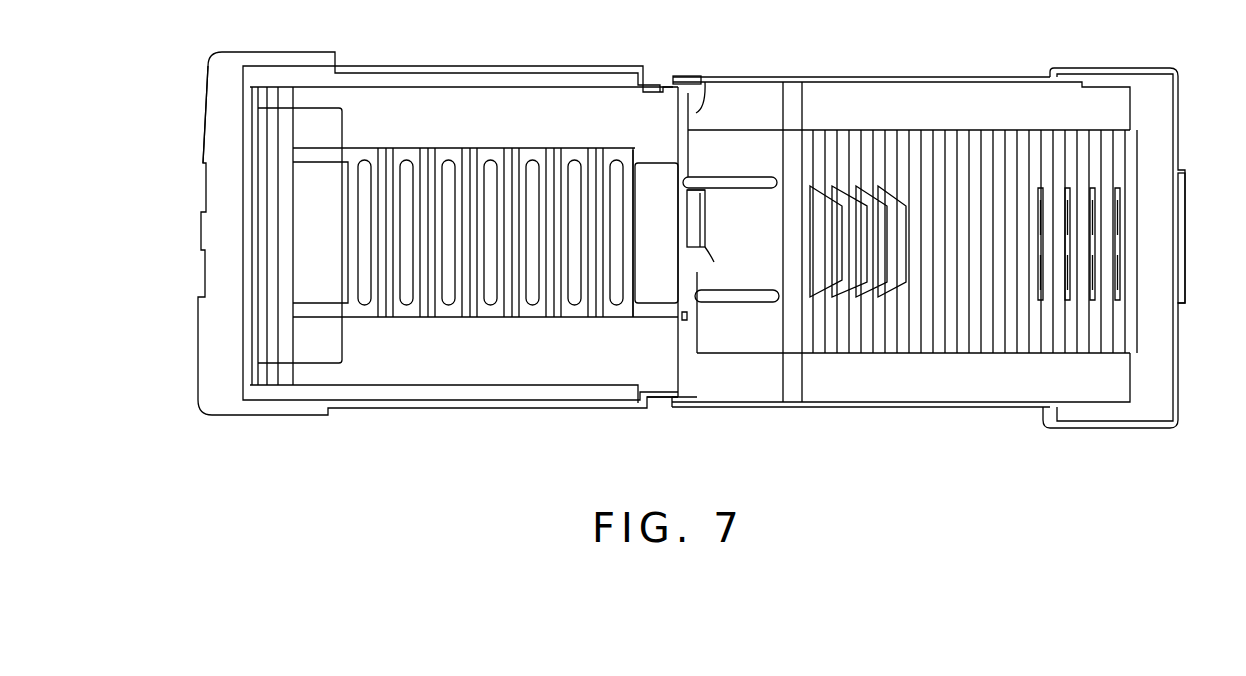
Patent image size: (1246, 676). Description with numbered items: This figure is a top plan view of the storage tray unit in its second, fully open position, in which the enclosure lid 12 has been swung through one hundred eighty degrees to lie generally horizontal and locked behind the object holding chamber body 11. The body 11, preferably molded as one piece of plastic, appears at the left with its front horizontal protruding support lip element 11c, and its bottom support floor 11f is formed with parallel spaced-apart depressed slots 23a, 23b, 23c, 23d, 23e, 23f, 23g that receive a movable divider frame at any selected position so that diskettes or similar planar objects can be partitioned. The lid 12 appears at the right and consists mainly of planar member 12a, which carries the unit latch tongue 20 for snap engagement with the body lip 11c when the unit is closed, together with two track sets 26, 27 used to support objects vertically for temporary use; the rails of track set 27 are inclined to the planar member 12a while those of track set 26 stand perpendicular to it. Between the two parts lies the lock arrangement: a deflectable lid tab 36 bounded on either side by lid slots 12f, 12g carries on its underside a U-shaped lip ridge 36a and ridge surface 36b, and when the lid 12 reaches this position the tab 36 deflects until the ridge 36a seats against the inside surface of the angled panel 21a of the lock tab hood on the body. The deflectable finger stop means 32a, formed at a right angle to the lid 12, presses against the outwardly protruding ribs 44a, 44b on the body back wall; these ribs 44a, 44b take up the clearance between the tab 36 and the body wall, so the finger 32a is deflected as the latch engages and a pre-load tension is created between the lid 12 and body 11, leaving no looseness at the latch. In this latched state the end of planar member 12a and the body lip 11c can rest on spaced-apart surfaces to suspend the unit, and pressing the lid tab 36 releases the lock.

The object holding chamber body 11 is at (438, 58).
The front horizontal protruding support lip element 11c is at (218, 75).
The bottom support floor 11f is at (633, 155).
The enclosure lid 12 is at (842, 74).
The planar member 12a is at (1162, 92).
The lid slot 12f is at (767, 178).
The lid slot 12g is at (773, 305).
The unit latch tongue 20 is at (1184, 196).
The angled panel 21a is at (722, 322).
The depressed slot 23a is at (379, 158).
The depressed slot 23b is at (403, 307).
The depressed slot 23c is at (458, 158).
The depressed slot 23d is at (488, 307).
The depressed slot 23e is at (532, 307).
The depressed slot 23f is at (573, 161).
The depressed slot 23g is at (609, 307).
The track set 26 is at (1054, 178).
The track set 27 is at (856, 178).
The deflectable finger stop means 32a is at (705, 75).
The deflectable lid tab 36 is at (704, 226).
The U-shaped lip ridge 36a is at (711, 216).
The ridge surface 36b is at (711, 253).
The outwardly protruding rib 44a is at (685, 316).
The outwardly protruding rib 44b is at (681, 153).